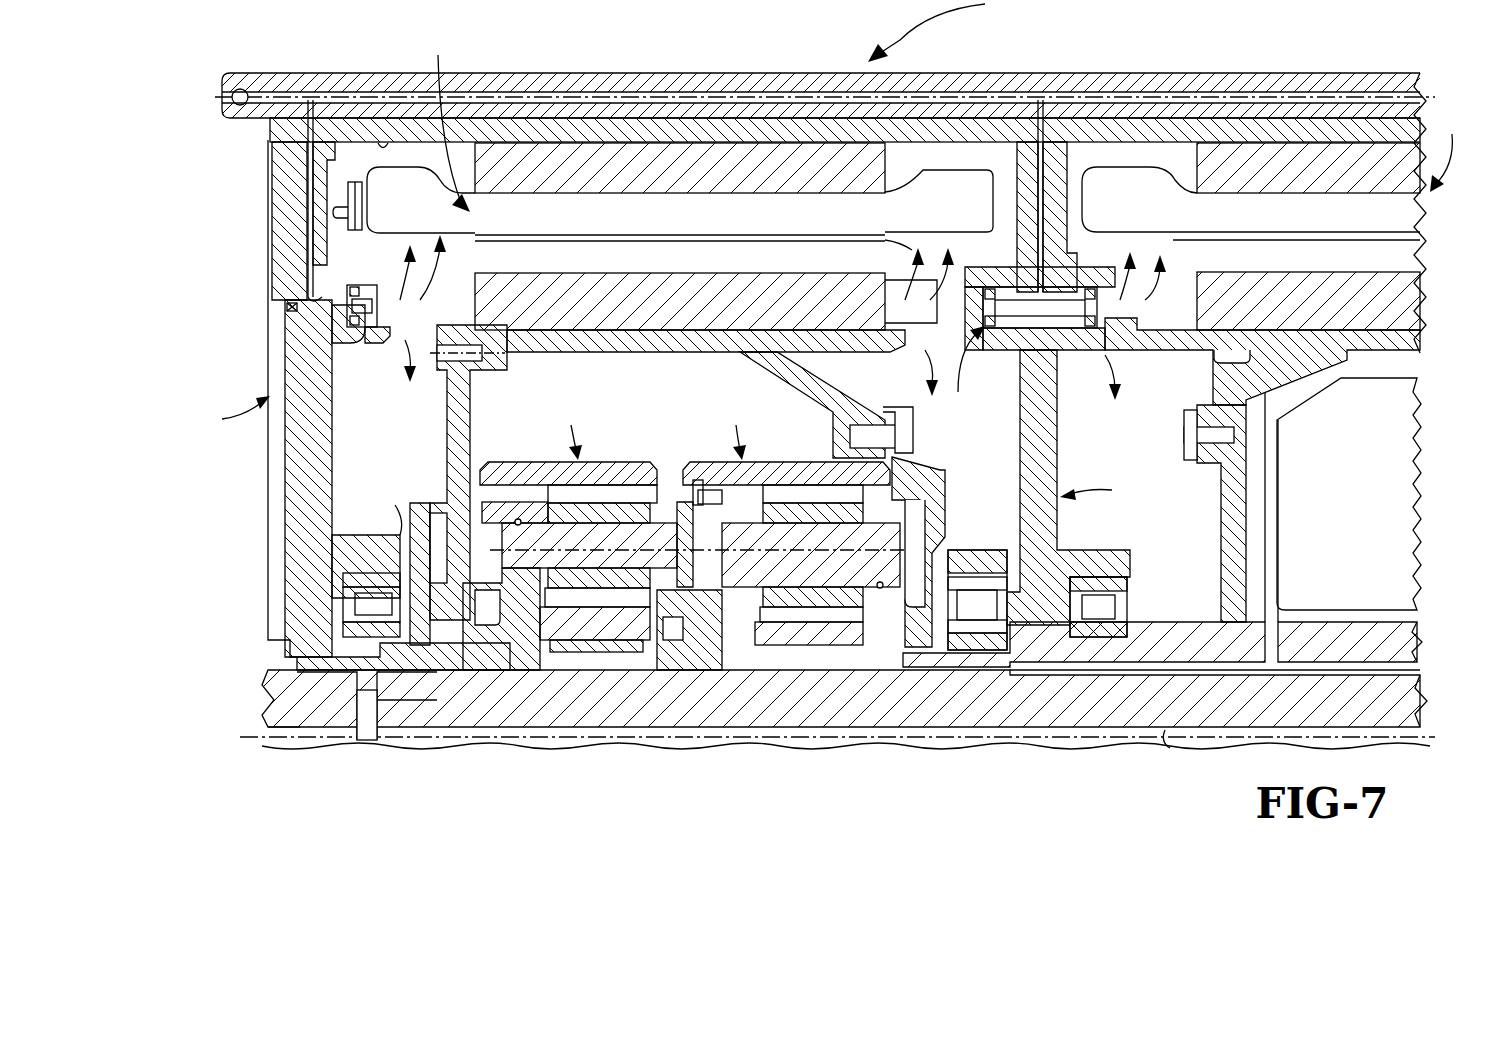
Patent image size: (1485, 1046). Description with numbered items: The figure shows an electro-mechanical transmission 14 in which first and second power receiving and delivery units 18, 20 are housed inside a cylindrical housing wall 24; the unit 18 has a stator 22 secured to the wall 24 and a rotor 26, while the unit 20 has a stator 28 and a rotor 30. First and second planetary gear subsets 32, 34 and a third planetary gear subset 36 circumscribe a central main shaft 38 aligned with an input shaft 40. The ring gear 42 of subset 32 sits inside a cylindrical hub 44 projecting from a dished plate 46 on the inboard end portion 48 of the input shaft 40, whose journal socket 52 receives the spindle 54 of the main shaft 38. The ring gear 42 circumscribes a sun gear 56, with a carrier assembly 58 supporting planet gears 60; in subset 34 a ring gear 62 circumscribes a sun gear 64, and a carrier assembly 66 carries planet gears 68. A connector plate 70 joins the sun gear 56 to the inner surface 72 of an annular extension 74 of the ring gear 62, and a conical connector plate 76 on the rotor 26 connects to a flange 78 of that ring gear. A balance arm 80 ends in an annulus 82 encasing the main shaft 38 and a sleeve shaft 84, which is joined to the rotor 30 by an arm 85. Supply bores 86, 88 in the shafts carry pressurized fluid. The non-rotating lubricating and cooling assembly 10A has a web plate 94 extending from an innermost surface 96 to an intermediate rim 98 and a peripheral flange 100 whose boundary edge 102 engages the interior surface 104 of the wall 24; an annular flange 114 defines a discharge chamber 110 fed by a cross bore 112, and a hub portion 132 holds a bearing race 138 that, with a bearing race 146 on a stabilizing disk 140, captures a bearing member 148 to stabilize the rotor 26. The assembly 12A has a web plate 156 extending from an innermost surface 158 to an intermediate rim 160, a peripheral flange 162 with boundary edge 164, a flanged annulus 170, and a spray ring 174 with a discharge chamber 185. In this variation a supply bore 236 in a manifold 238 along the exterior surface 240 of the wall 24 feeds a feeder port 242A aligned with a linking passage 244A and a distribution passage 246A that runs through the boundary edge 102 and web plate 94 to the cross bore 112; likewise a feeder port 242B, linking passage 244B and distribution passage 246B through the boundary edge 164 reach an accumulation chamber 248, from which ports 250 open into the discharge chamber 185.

The lubricating and cooling assembly 10A is at (221, 413).
The lubricating and cooling assembly 12A is at (1107, 489).
The electro-mechanical transmission 14 is at (934, 31).
The first power receiving and delivery unit 18 is at (421, 129).
The second power receiving and delivery unit 20 is at (1450, 147).
The stator 22 is at (543, 168).
The cylindrical wall 24 is at (813, 130).
The rotor 26 is at (612, 307).
The stator 28 is at (1335, 177).
The rotor 30 is at (1365, 285).
The first planetary gear subset 32 is at (571, 427).
The second planetary gear subset 34 is at (697, 472).
The third planetary gear subset 36 is at (1338, 510).
The central main shaft 38 is at (905, 707).
The input shaft 40 is at (280, 707).
The outer gear member 42 is at (654, 470).
The cylindrical hub 44 is at (563, 477).
The dished plate 46 is at (427, 527).
The cylindrical inboard end portion 48 is at (367, 682).
The journal socket 52 is at (407, 692).
The orienting and aligning spindle 54 is at (387, 710).
The inner gear member 56 is at (545, 648).
The carrier assembly 58 is at (490, 643).
The planet gears 60 is at (618, 513).
The outer ring gear 62 is at (747, 492).
The inner sun gear 64 is at (753, 615).
The carrier assembly 66 is at (717, 643).
The planet gears 68 is at (842, 510).
The connector plate 70 is at (683, 605).
The radially inner surface 72 is at (678, 478).
The annular extension 74 is at (790, 467).
The conical connector plate 76 is at (795, 375).
The flange 78 is at (897, 422).
The balance arm 80 is at (938, 512).
The annulus 82 is at (970, 643).
The sleeve shaft 84 is at (803, 650).
The arm 85 is at (1230, 520).
The supply bore 86 is at (1170, 735).
The supply bore 88 is at (293, 732).
The web plate 94 is at (295, 380).
The annular innermost surface 96 is at (272, 657).
The intermediate rim 98 is at (357, 277).
The peripheral flange 100 is at (277, 200).
The boundary edge 102 is at (287, 137).
The cylindrical interior surface 104 is at (384, 147).
The annular discharge chamber 110 is at (335, 313).
The cross bore 112 is at (288, 305).
The annular flange 114 is at (373, 340).
The hub portion 132 is at (383, 557).
The bearing race 138 is at (370, 540).
The stabilizing disk 140 is at (452, 398).
The bearing race 146 is at (370, 625).
The bearing member 148 is at (370, 603).
The web plate 156 is at (1050, 463).
The radially innermost annular surface 158 is at (1053, 637).
The intermediate rim 160 is at (1060, 282).
The peripheral flange 162 is at (1023, 192).
The boundary edge 164 is at (1055, 135).
The flanged annulus 170 is at (1090, 342).
The spray ring 174 is at (959, 352).
The discharge chamber 185 is at (1053, 315).
The supply bore 236 is at (758, 92).
The manifold 238 is at (627, 83).
The exterior surface 240 is at (686, 118).
The feeder port 242A is at (306, 112).
The feeder port 242B is at (1033, 117).
The linking passage 244A is at (331, 117).
The linking passage 244B is at (1007, 118).
The distribution passage 246A is at (308, 182).
The distribution passage 246B is at (1018, 213).
The accumulation chamber 248 is at (1040, 303).
The ports 250 is at (998, 293).